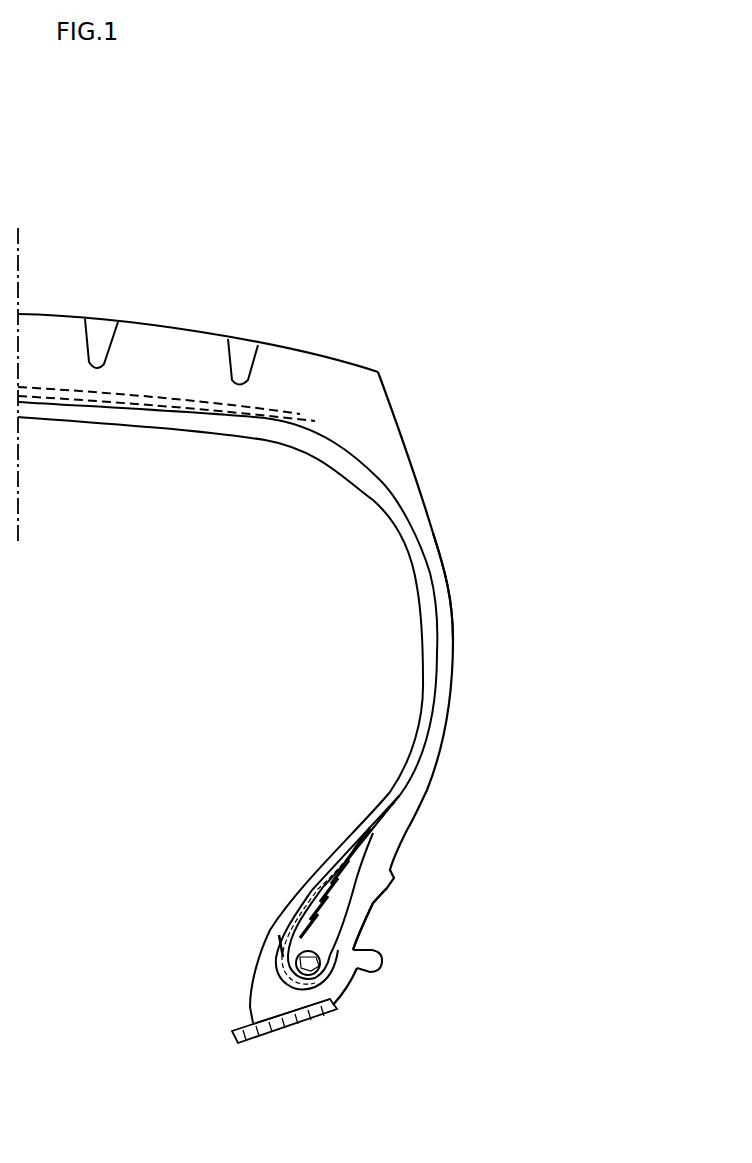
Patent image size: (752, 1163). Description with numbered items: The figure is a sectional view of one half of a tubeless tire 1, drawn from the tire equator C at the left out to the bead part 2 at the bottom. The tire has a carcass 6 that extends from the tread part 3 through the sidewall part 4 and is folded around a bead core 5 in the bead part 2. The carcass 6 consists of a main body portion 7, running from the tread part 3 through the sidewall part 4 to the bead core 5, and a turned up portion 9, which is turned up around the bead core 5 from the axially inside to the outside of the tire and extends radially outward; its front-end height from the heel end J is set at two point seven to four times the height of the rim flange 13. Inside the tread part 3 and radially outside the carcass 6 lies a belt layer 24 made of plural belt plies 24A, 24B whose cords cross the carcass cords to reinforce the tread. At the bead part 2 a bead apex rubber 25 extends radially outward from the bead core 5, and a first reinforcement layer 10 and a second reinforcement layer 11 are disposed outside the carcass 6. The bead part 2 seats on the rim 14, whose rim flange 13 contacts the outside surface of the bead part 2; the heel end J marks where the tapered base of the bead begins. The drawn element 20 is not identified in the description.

The tubeless tire 1 is at (543, 338).
The bead part 2 is at (243, 944).
The tread part 3 is at (181, 293).
The sidewall part 4 is at (478, 665).
The bead core 5 is at (304, 985).
The carcass 6 is at (227, 695).
The main body portion 7 is at (434, 648).
The turned up portion 9 is at (320, 860).
The first reinforcement layer 10 is at (283, 980).
The second reinforcement layer 11 is at (305, 897).
The rim flange 13 is at (360, 977).
The rim 14 is at (330, 1012).
The clinch rubber 20 is at (373, 908).
The belt layer 24 is at (200, 316).
The belt ply 24A is at (267, 412).
The belt ply 24B is at (173, 392).
The bead apex rubber 25 is at (373, 870).
The equator C is at (18, 262).
The heel end J is at (345, 1005).